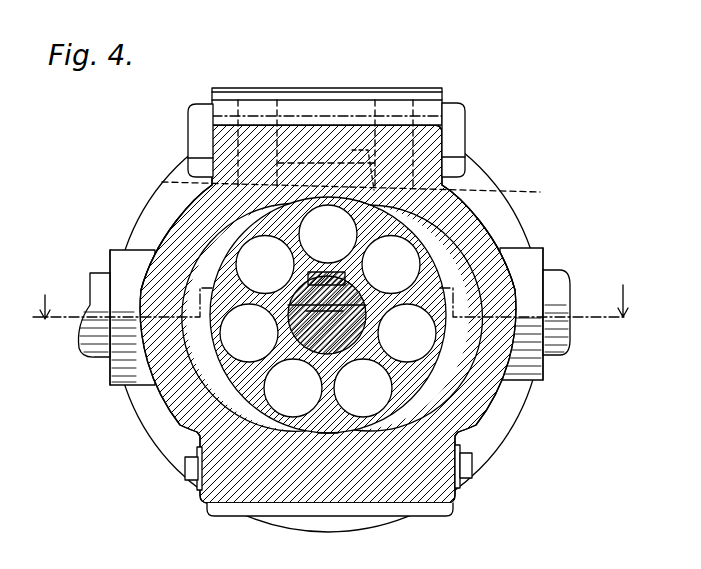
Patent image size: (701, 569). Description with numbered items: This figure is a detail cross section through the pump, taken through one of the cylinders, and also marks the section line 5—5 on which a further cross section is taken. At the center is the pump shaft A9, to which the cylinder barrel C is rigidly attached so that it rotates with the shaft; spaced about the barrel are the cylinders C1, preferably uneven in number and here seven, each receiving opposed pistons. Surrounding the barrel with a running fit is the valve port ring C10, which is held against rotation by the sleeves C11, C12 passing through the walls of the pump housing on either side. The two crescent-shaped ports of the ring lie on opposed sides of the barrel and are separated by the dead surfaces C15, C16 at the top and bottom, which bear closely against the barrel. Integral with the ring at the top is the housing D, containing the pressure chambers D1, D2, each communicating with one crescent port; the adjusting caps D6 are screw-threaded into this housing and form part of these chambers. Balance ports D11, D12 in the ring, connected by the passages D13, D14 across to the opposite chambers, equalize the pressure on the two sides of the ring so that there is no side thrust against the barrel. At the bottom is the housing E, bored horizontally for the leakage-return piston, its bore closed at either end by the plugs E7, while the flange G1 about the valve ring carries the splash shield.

The flange G1 is at (143, 417).
The sleeve C12 is at (100, 360).
The sleeve C11 is at (555, 357).
The valve port ring C10 is at (465, 408).
The cylinder barrel C is at (386, 315).
The cylinder C1 is at (336, 311).
The pump shaft A9 is at (260, 333).
The housing D is at (292, 98).
The pressure chamber D1 is at (255, 100).
The pressure chamber D2 is at (393, 100).
The dead surface C15 is at (320, 192).
The adjusting cap D6 is at (497, 116).
The passage D13 is at (238, 174).
The passage D14 is at (462, 184).
The balance port D11 is at (210, 248).
The balance port D12 is at (437, 247).
The housing E is at (428, 510).
The plug E7 is at (497, 480).
The dead surface C16 is at (328, 437).
The section line 5— 5 is at (330, 308).